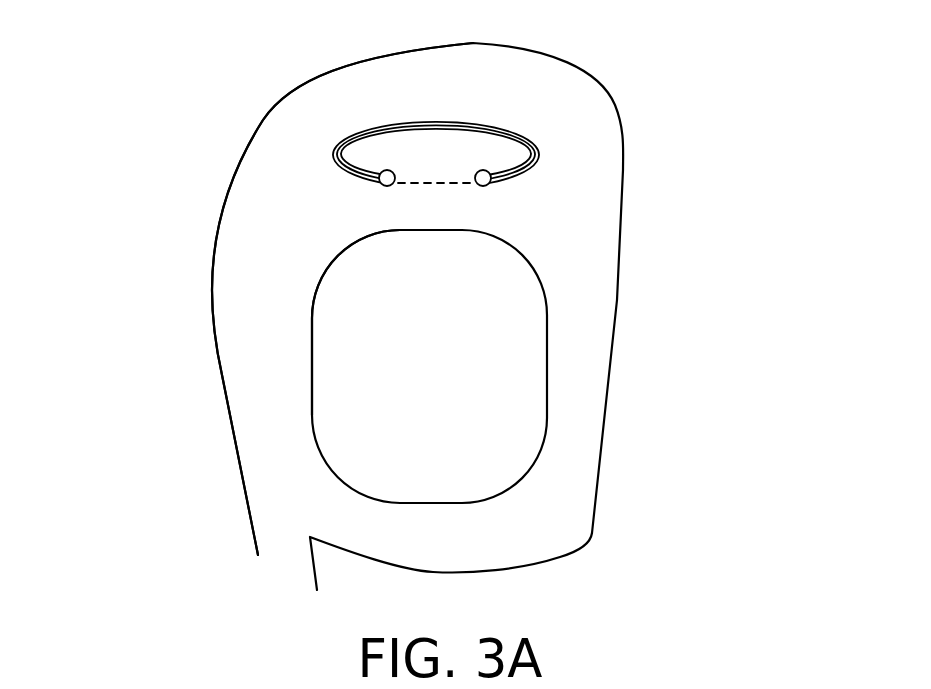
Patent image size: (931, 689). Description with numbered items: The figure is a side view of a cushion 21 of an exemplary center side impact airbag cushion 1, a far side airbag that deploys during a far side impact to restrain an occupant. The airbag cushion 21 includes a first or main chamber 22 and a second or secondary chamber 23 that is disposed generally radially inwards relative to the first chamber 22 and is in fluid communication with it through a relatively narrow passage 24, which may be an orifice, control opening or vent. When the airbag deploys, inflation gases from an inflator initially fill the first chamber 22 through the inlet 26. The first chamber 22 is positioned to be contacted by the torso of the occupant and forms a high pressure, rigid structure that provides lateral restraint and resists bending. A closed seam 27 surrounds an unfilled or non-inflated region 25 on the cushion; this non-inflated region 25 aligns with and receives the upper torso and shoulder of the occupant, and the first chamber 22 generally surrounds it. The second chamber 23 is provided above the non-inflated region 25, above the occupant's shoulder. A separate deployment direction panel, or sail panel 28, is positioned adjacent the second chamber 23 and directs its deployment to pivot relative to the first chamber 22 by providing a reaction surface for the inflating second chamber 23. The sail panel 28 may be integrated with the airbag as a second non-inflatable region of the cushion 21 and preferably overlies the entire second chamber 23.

The center side impact airbag cushion 1 is at (690, 390).
The cushion 21 is at (183, 87).
The first chamber 22 is at (225, 230).
The second chamber 23 is at (535, 161).
The passage 24 is at (415, 173).
The non-inflated region 25 is at (533, 330).
The inlet 26 is at (283, 545).
The closed seam 27 is at (307, 390).
The sail panel 28 is at (517, 138).